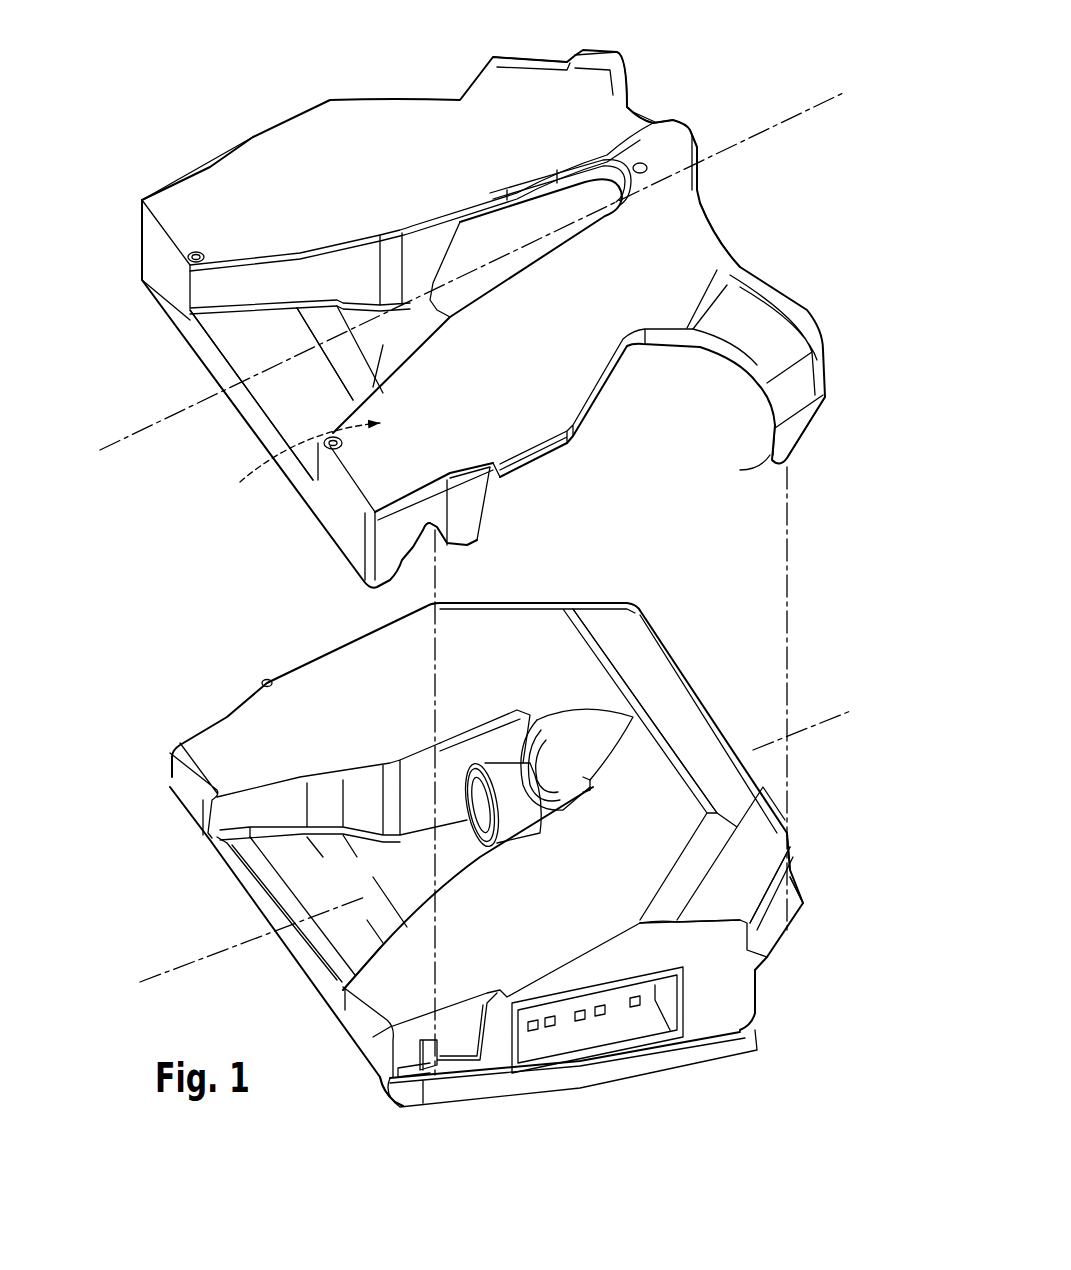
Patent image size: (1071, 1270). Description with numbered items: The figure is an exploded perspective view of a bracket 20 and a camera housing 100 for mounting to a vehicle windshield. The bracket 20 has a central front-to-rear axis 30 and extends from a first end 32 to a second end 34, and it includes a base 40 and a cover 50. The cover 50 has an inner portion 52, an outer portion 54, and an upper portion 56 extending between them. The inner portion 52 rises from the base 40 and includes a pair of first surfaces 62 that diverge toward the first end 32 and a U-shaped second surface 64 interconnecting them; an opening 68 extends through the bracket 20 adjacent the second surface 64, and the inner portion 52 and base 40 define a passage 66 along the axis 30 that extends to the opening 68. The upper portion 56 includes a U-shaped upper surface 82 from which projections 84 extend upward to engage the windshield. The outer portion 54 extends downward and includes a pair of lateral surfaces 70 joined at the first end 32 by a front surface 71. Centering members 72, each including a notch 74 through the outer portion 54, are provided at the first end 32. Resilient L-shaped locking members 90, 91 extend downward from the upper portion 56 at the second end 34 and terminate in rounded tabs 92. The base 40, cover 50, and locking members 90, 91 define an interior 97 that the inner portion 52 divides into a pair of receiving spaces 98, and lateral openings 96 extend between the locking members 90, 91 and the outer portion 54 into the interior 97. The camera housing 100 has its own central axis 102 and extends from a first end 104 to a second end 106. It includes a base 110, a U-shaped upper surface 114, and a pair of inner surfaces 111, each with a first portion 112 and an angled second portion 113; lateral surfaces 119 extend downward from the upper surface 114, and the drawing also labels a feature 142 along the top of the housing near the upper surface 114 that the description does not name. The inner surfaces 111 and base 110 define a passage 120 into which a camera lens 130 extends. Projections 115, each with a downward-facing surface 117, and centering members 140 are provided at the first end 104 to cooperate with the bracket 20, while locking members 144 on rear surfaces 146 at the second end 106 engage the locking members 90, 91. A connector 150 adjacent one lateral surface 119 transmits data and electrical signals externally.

The bracket 20 is at (226, 130).
The central front-to-rear axis 30 is at (822, 103).
The first end 32 is at (156, 323).
The second end 34 is at (822, 306).
The base 40 is at (297, 386).
The cover 50 is at (380, 125).
The inner portion 52 is at (268, 273).
The outer portion 54 is at (473, 483).
The upper portion 56 is at (521, 125).
The first surfaces 62 is at (320, 267).
The second surface 64 is at (607, 174).
The passage 66 is at (250, 332).
The opening 68 is at (602, 213).
The lateral surfaces 70 is at (452, 519).
The front surface 71 is at (247, 400).
The centering members 72 is at (415, 543).
The notch 74 is at (445, 552).
The upper surface 82 is at (628, 153).
The projections 84 is at (189, 256).
The locking member 90 is at (559, 80).
The locking member 91 is at (823, 386).
The tab 92 is at (765, 450).
The lateral openings 96 is at (655, 460).
The interior 97 is at (677, 403).
The receiving spaces 98 is at (290, 140).
The camera housing 100 is at (463, 1112).
The central front-to-rear axis 102 is at (833, 720).
The first end 104 is at (347, 1063).
The second end 106 is at (826, 828).
The base 110 is at (323, 926).
The inner surfaces 111 is at (350, 789).
The first portion 112 is at (413, 799).
The second portion 113 is at (278, 819).
The upper surface 114 is at (660, 734).
The projections 115 is at (170, 777).
The surface 117 is at (213, 845).
The lateral surfaces 119 is at (730, 983).
The passage 120 is at (300, 863).
The camera lens 130 is at (513, 813).
The centering member 140 is at (440, 1060).
The top edge 142 is at (583, 598).
The locking members 144 is at (793, 903).
The rear surfaces 146 is at (790, 877).
The connector 150 is at (690, 1040).